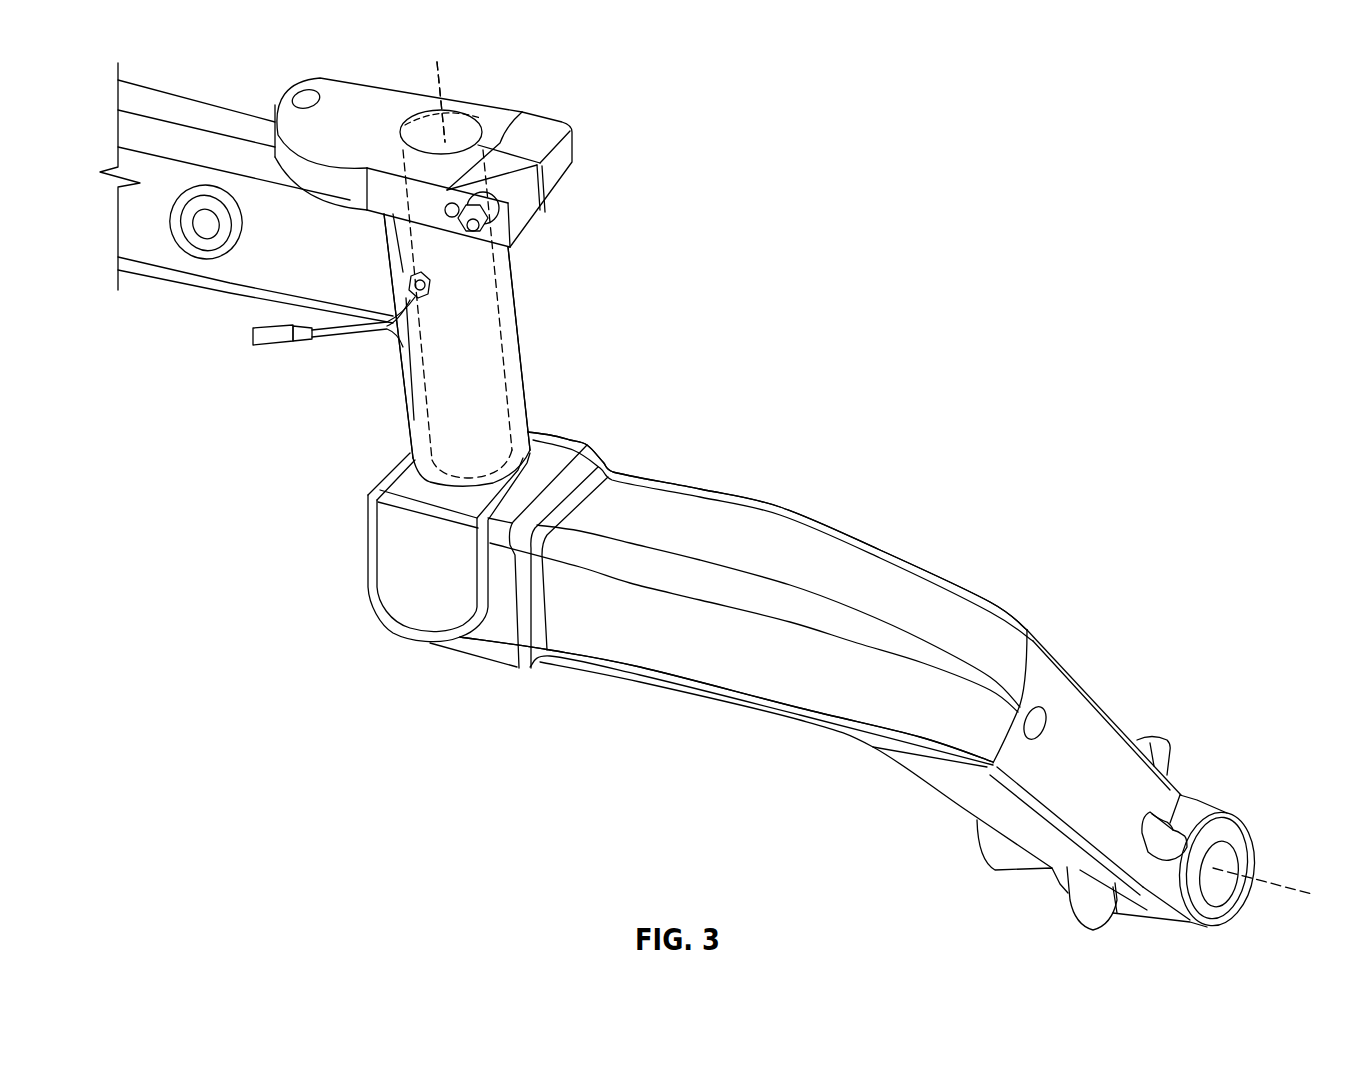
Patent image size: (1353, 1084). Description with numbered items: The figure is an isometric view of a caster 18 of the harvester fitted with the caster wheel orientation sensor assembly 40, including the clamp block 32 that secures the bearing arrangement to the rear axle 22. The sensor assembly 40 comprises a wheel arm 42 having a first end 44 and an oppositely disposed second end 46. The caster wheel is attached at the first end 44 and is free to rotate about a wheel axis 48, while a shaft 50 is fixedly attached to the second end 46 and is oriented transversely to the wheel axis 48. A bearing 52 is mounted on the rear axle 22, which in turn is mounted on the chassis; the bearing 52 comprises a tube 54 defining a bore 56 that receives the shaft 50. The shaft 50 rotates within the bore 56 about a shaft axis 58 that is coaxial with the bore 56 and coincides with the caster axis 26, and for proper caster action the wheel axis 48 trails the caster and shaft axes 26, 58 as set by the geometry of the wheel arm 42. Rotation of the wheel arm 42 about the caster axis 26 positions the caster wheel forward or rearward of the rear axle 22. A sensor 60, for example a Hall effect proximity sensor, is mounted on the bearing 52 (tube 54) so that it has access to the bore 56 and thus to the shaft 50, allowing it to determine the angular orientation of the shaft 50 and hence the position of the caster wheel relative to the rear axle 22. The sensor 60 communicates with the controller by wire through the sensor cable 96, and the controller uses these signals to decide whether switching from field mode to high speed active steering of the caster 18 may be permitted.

The caster 18 is at (993, 532).
The rear axle 22 is at (177, 285).
The caster axis 26 is at (440, 73).
The clamp block 32 is at (558, 167).
The sensor assembly 40 is at (840, 298).
The wheel arm 42 is at (1020, 628).
The first end 44 is at (1240, 817).
The second end 46 is at (375, 558).
The wheel axis 48 is at (1282, 902).
The shaft 50 is at (478, 93).
The bearing 52 is at (517, 288).
The tube 54 is at (457, 336).
The bore 56 is at (510, 358).
The shaft axis 58 is at (441, 102).
The sensor 60 is at (400, 363).
The sensor cable 96 is at (327, 340).